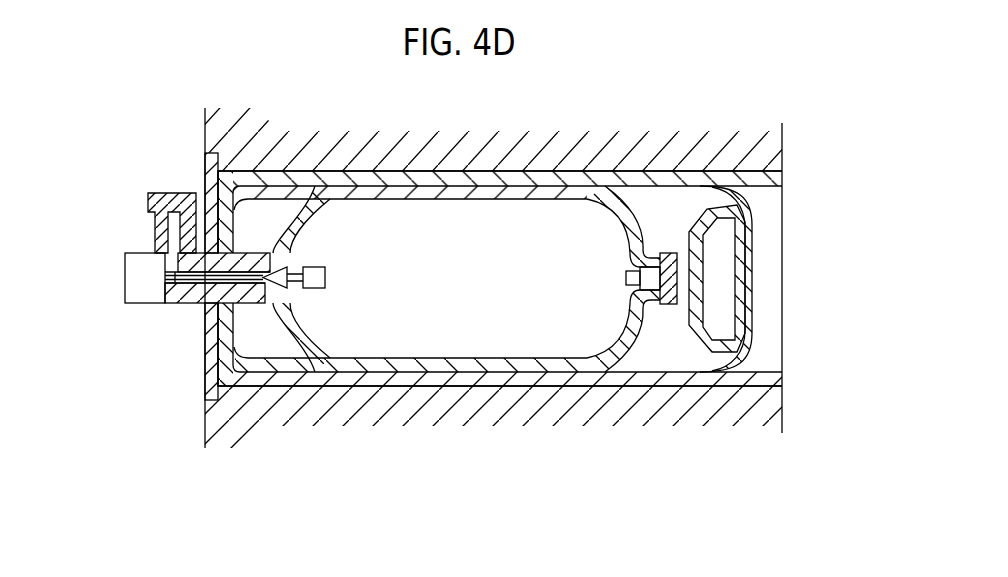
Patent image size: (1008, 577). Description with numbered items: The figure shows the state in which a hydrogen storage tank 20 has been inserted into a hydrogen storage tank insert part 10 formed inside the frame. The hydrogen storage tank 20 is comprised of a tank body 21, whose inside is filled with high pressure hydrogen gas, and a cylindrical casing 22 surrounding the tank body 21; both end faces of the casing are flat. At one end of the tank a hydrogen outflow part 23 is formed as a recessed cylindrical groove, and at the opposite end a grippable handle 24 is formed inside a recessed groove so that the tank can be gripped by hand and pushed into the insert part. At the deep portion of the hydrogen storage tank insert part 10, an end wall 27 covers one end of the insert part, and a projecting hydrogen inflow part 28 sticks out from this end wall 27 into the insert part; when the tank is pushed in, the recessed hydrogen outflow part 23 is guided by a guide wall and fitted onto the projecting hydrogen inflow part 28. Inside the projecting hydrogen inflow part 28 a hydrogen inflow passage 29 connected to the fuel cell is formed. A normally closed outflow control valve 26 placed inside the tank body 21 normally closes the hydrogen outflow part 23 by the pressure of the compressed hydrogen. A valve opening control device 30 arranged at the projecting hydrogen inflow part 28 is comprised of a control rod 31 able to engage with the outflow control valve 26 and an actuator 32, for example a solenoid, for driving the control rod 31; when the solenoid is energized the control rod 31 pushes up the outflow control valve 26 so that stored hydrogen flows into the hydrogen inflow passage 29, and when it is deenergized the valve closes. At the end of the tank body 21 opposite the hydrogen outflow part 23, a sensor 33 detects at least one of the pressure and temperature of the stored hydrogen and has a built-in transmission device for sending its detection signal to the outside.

The hydrogen storage tank insert part 10 is at (765, 200).
The hydrogen storage tank 20 is at (580, 158).
The tank body 21 is at (497, 199).
The cylindrical casing 22 is at (373, 181).
The hydrogen outflow part 23 is at (247, 296).
The handle 24 is at (747, 273).
The outflow control valve 26 is at (330, 278).
The end wall 27 is at (206, 366).
The projecting hydrogen inflow part 28 is at (241, 255).
The hydrogen inflow passage 29 is at (173, 218).
The valve opening control device 30 is at (140, 315).
The control rod 31 is at (186, 284).
The actuator 32 is at (143, 275).
The sensor 33 is at (650, 282).